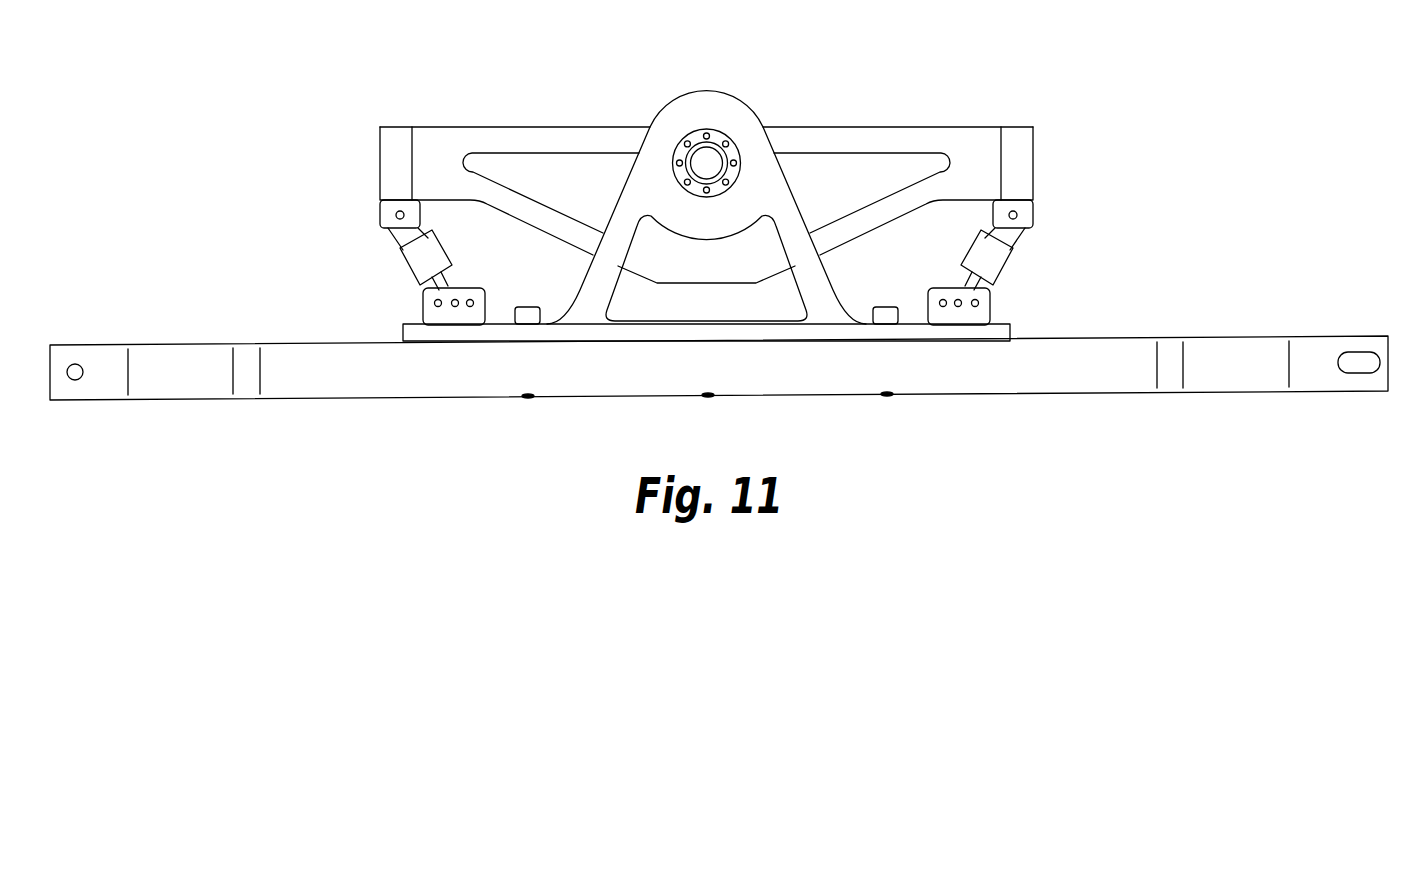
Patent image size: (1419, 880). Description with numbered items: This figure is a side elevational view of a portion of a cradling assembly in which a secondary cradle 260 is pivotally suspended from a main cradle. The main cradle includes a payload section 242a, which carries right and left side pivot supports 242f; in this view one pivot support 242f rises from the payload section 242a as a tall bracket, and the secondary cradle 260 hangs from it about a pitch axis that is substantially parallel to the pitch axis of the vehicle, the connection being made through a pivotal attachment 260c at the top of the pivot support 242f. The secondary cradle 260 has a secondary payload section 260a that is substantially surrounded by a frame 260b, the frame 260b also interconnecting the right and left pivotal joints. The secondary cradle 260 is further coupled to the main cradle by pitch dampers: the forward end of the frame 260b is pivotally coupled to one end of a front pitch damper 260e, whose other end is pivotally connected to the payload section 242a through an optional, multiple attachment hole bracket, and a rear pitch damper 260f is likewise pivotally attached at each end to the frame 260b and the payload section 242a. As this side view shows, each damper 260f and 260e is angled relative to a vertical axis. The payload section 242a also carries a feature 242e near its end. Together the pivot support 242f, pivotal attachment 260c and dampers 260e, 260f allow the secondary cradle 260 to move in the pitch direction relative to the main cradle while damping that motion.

The secondary cradle 260 is at (487, 140).
The secondary payload section 260a is at (583, 193).
The secondary cradle frame 260b is at (1015, 157).
The pivotal attachment 260c is at (705, 162).
The front pitch damper 260e is at (997, 262).
The rear pitch damper 260f is at (410, 266).
The payload section 242a is at (812, 372).
The mounting slot 242e is at (1355, 364).
The side pivot support 242f is at (712, 108).